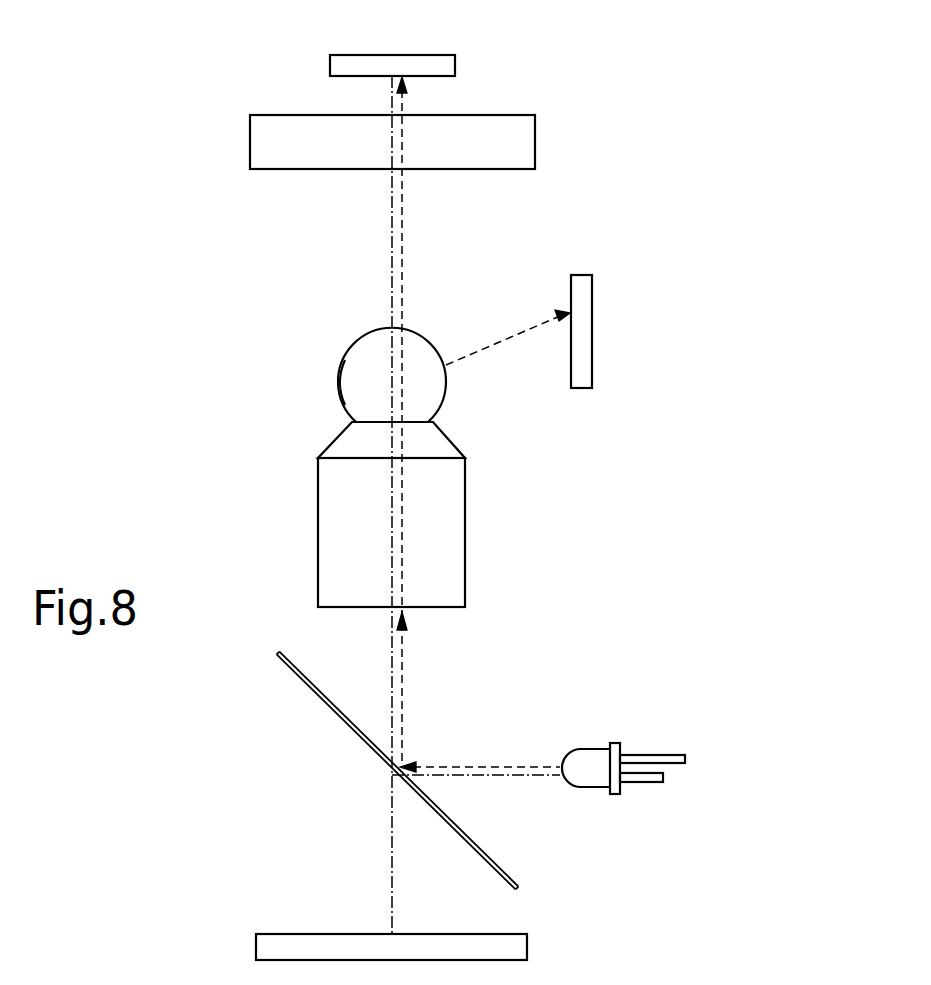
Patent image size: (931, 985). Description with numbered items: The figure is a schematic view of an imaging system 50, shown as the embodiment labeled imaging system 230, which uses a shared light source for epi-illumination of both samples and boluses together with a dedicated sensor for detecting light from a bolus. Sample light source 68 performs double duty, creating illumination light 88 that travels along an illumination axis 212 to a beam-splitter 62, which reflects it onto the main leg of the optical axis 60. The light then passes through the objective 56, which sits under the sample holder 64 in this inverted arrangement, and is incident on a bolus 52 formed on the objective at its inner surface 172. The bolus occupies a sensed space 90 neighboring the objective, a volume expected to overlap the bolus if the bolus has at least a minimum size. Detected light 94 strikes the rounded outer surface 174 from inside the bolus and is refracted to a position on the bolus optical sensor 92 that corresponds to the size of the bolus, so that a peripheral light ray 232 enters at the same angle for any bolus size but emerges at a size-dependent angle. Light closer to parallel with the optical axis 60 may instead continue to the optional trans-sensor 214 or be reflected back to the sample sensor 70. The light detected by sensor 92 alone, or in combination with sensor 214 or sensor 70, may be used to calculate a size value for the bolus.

The imaging system 50 is at (135, 244).
The imaging system embodiment 230 is at (155, 306).
The trans-sensor 214 is at (390, 55).
The sample holder 64 is at (293, 115).
The optical axis 60 is at (392, 237).
The light ray 232 is at (402, 237).
The bolus 52 is at (355, 340).
The space 90 is at (318, 353).
The rounded outer surface 174 is at (337, 381).
The inner surface 172 is at (405, 422).
The detected light 94 is at (513, 337).
The bolus optical sensor 92 is at (592, 328).
The objective 56 is at (318, 532).
The beam-splitter 62 is at (315, 693).
The illumination light 88 is at (497, 767).
The sample light source 68 is at (593, 749).
The illumination axis 212 is at (470, 775).
The sample sensor 70 is at (307, 934).